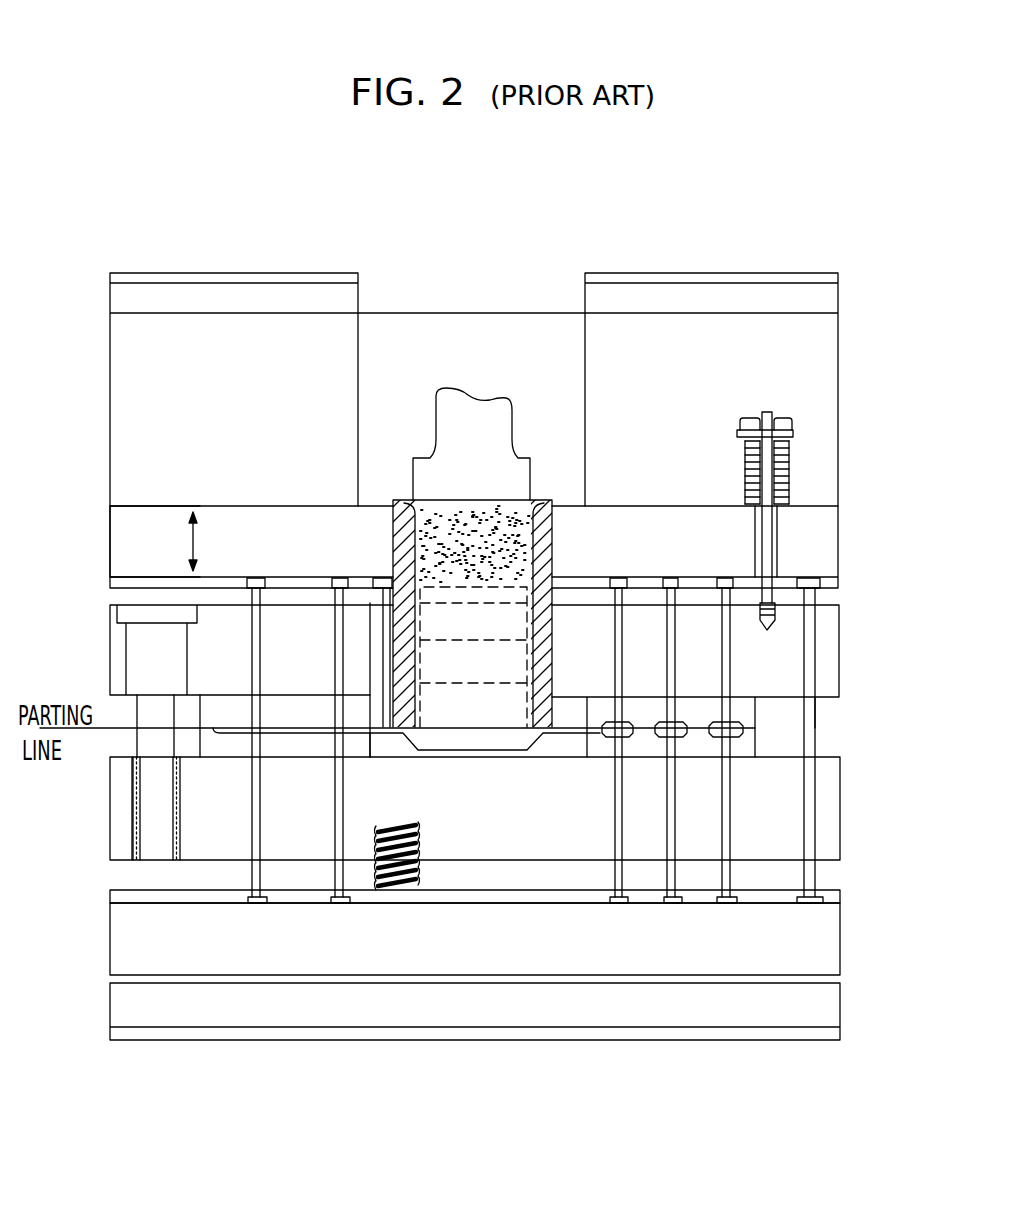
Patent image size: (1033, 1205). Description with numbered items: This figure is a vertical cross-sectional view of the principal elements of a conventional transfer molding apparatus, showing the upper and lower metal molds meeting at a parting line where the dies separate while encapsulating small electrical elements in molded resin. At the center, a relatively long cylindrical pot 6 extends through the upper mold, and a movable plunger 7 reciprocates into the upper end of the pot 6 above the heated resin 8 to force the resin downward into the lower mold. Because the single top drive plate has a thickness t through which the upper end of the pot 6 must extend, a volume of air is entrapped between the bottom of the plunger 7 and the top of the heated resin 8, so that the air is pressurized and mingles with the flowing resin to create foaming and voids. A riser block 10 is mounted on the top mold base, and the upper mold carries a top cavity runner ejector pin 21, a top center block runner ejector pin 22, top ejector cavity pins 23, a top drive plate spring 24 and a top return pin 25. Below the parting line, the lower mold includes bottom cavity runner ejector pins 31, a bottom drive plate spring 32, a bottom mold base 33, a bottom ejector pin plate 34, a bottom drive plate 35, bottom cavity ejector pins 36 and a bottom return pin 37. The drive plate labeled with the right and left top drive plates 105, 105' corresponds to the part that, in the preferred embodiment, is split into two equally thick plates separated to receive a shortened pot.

The cylindrical pot 6 is at (553, 547).
The movable plunger 7 is at (462, 413).
The heated resin 8 is at (448, 612).
The riser block 10 is at (343, 347).
The top cavity runner ejector pin 21 is at (258, 622).
The top center block runner ejector pin 22 is at (383, 667).
The top ejector cavity pin 23 is at (727, 640).
The top drive plate spring 24 is at (780, 460).
The top return pin 25 is at (808, 712).
The bottom cavity runner ejector pin 31 is at (255, 870).
The bottom drive plate spring 32 is at (418, 838).
The bottom mold base 33 is at (832, 840).
The bottom ejector pin plate 34 is at (488, 895).
The bottom drive plate 35 is at (830, 948).
The bottom cavity ejector pin 36 is at (617, 842).
The bottom return pin 37 is at (808, 808).
The right top drive plate 105 is at (511, 547).
The left top drive plate 105' is at (125, 540).